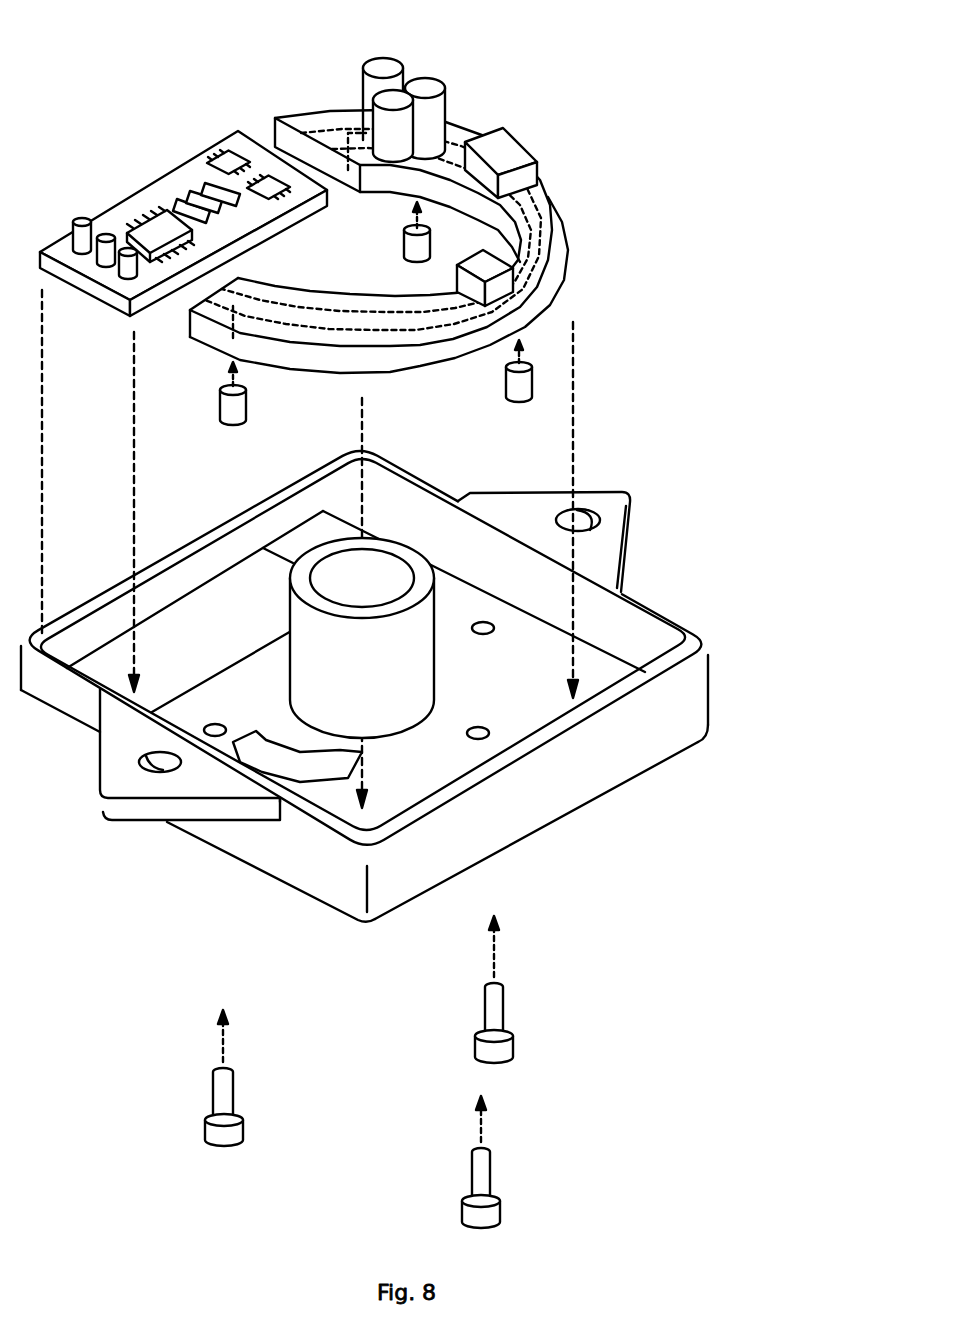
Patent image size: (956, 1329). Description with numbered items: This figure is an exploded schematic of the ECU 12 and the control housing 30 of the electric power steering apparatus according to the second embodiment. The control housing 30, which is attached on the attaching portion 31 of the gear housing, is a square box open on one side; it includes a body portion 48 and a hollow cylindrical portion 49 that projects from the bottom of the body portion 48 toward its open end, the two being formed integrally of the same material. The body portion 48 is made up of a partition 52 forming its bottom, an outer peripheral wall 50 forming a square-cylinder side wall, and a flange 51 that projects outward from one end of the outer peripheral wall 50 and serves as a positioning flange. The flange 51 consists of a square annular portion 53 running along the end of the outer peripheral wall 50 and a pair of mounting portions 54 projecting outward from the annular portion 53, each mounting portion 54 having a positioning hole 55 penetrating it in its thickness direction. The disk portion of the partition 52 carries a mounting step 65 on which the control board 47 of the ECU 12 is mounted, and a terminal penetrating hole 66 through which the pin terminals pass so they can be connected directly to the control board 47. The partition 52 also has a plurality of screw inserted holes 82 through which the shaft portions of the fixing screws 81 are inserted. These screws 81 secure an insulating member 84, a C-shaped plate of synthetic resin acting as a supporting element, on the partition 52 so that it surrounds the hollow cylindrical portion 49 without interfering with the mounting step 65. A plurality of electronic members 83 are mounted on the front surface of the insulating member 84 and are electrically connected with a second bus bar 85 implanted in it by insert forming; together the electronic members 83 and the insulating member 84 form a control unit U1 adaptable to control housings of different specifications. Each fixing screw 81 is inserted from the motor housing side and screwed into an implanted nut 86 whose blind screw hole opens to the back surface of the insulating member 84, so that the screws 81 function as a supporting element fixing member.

The ECU 12 is at (415, 243).
The control unit U1 is at (415, 243).
The control housing 30 is at (397, 672).
The attaching portion 31 is at (640, 636).
The control board 47 is at (156, 193).
The body portion 48 is at (712, 704).
The hollow cylindrical portion 49 is at (412, 707).
The outer peripheral wall 50 is at (623, 765).
The flange 51 is at (318, 845).
The partition 52 is at (522, 713).
The square annular portion 53 is at (45, 662).
The mounting portion 54 is at (625, 548).
The positioning hole 55 is at (585, 510).
The mounting step 65 is at (205, 600).
The terminal penetrating hole 66 is at (283, 750).
The fixing screw 81 is at (233, 1095).
The screw inserted hole 82 is at (213, 723).
The electronic member 83 is at (420, 60).
The insulating member 84 is at (415, 241).
The second bus bar 85 is at (560, 224).
The implanted nut 86 is at (404, 243).